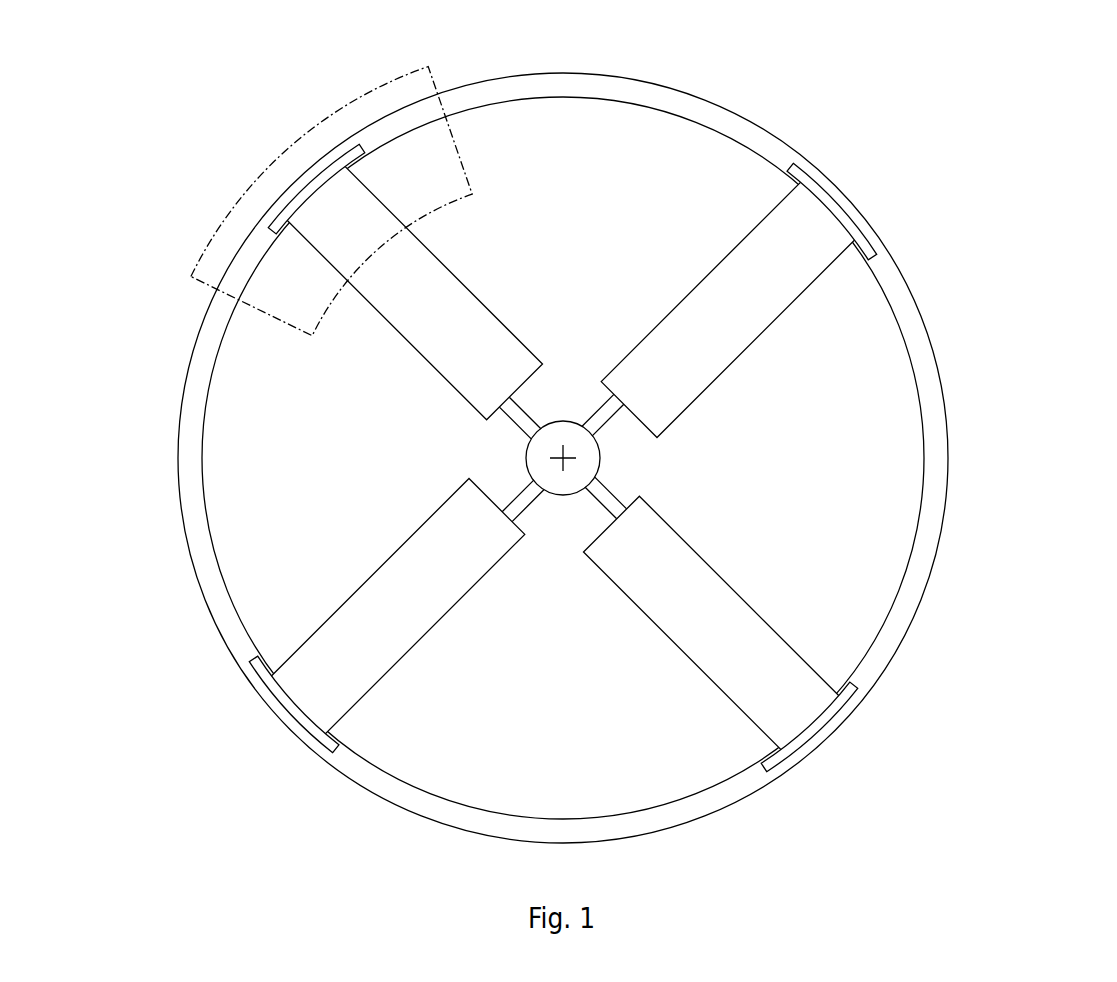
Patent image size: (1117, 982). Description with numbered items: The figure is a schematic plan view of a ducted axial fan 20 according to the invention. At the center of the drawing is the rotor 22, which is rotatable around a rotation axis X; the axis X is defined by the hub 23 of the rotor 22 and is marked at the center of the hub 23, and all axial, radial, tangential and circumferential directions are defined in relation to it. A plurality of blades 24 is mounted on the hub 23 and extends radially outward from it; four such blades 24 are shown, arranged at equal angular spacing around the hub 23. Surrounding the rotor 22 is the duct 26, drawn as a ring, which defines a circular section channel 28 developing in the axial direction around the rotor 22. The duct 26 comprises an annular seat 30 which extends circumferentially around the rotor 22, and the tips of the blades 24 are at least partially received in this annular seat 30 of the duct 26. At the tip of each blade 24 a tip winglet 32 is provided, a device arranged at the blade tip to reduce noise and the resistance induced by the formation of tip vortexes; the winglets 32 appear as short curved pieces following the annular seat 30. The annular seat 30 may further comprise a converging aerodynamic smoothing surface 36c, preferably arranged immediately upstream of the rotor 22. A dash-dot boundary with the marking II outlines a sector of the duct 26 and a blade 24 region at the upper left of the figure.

The ducted axial fan 20 is at (579, 455).
The rotor 22 is at (750, 347).
The hub 23 is at (631, 399).
The blades 24 is at (780, 660).
The duct 26 is at (183, 390).
The circular section channel 28 is at (290, 475).
The annular seat 30 is at (220, 598).
The tip winglet 32 is at (820, 740).
The converging aerodynamic smoothing surface 36c is at (903, 567).
The rotation axis X is at (566, 460).
The section II detail II is at (224, 226).